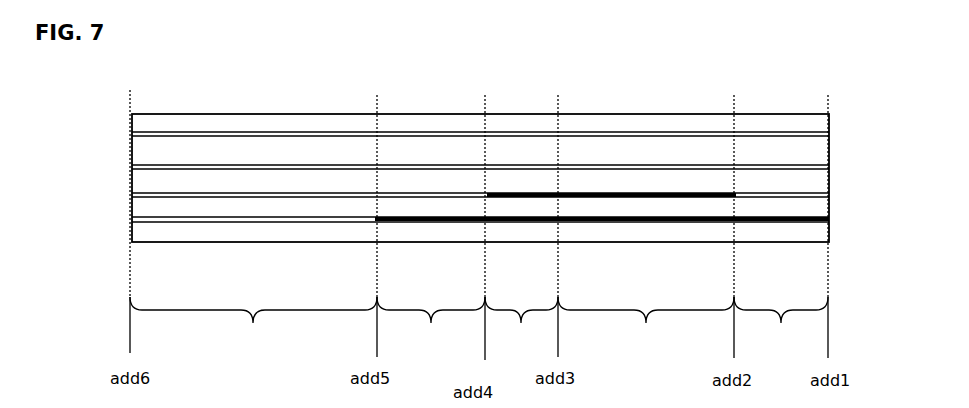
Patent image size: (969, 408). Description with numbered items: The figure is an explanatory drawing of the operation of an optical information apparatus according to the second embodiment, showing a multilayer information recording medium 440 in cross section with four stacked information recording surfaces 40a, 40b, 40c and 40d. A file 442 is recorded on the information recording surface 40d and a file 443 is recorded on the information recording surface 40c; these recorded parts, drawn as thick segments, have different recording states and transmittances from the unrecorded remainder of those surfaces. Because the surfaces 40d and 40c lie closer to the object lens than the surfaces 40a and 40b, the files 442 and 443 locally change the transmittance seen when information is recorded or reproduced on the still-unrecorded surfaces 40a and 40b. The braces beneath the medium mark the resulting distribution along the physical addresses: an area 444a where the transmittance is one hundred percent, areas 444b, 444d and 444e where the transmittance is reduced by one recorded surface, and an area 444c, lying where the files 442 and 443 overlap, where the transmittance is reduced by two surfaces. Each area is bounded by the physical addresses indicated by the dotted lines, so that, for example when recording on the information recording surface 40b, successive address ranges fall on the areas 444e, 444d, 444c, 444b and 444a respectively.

The memory cell array / address region 440 is at (795, 218).
The information recording surface 40a is at (132, 133).
The information recording surface 40b is at (132, 165).
The information recording surface 40c is at (132, 193).
The information recording surface 40d is at (132, 218).
The file 442 is at (391, 218).
The file 443 is at (595, 193).
The area 444a is at (253, 330).
The area 444b is at (431, 330).
The area 444c is at (521, 330).
The area 444d is at (646, 328).
The area 444e is at (781, 330).